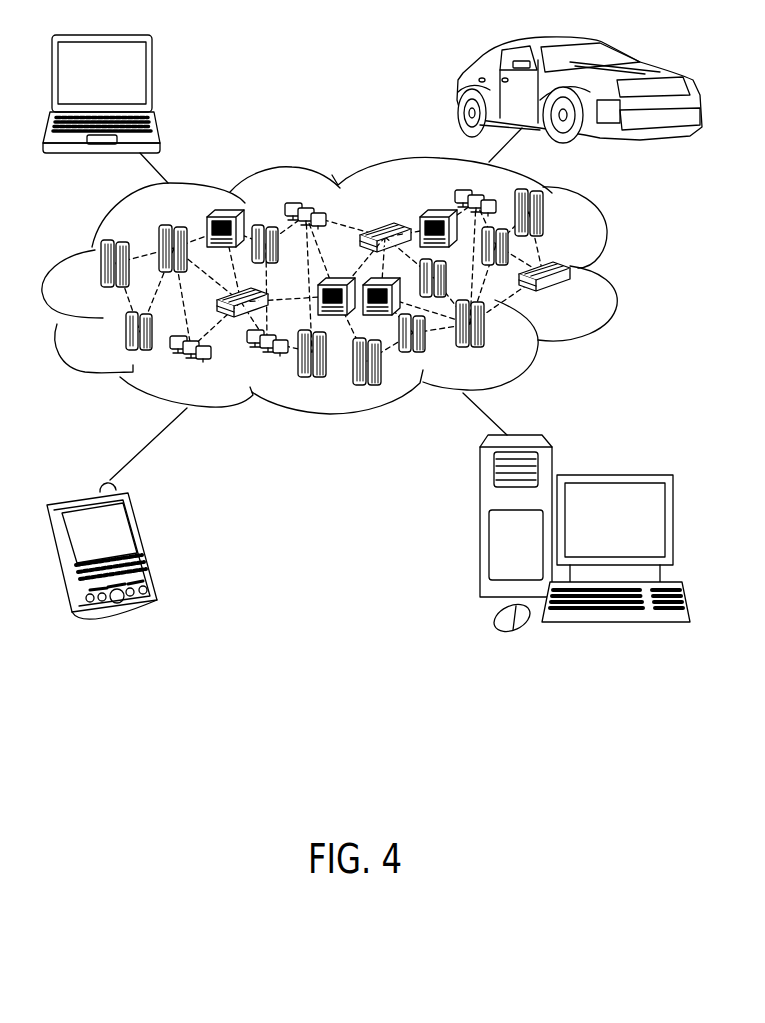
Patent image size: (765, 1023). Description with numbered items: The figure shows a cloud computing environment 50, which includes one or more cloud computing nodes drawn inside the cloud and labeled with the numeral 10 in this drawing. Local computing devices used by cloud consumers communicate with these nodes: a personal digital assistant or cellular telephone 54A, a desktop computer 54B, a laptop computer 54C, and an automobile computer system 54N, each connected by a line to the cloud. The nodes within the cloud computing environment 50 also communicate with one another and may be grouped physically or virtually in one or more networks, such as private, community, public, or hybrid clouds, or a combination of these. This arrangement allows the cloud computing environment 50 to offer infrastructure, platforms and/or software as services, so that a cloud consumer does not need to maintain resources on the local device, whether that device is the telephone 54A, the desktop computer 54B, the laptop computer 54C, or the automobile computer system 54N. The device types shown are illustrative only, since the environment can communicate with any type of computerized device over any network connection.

The cloud computing nodes 10 is at (573, 295).
The cloud computing environment 50 is at (607, 268).
The personal digital assistant or cellular telephone 54A is at (140, 540).
The desktop computer 54B is at (612, 478).
The laptop computer 54C is at (150, 78).
The automobile computer system 54N is at (460, 90).